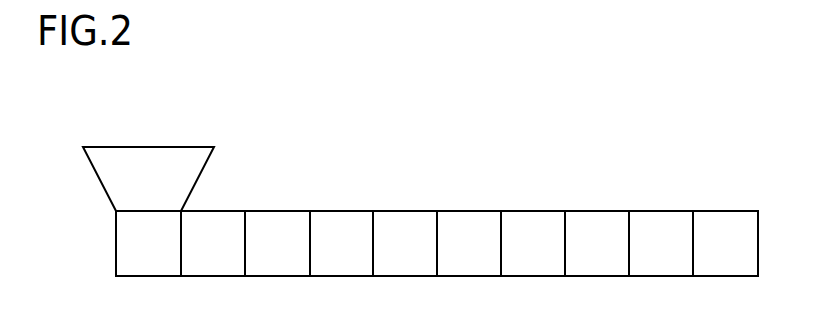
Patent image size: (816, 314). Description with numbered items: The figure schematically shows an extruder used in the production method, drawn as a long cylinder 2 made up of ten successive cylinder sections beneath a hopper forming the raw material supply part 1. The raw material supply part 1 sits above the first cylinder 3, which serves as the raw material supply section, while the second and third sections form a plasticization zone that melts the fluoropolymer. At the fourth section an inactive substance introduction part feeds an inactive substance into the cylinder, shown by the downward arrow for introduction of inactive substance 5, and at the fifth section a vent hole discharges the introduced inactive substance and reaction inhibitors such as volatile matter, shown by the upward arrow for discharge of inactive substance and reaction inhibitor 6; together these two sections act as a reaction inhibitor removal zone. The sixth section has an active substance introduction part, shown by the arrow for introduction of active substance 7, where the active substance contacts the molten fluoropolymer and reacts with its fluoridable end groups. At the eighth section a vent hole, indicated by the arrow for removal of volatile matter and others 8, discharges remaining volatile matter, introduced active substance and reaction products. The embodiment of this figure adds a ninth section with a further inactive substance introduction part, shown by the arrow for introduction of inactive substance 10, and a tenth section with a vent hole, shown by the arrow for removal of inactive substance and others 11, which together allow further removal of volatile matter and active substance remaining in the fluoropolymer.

The raw material supply part 1 is at (143, 135).
The cylinder 2 is at (398, 233).
The first cylinder 3 is at (120, 245).
The introduction of inactive substance 5 is at (338, 154).
The discharge of inactive substance and reaction inhibitor 6 is at (403, 154).
The introduction of active substance 7 is at (467, 154).
The removal of volatile matter and others 8 is at (595, 154).
The introduction of inactive substance 10 is at (659, 154).
The removal of inactive substance and others 11 is at (722, 154).